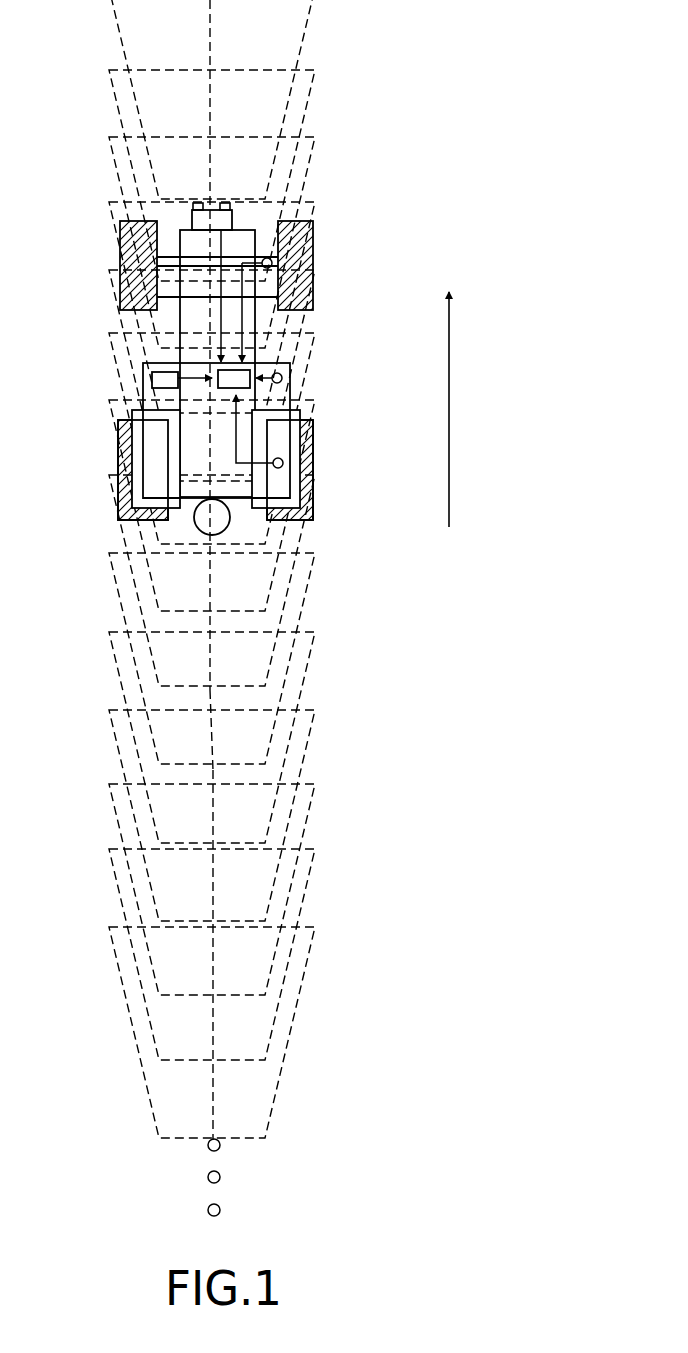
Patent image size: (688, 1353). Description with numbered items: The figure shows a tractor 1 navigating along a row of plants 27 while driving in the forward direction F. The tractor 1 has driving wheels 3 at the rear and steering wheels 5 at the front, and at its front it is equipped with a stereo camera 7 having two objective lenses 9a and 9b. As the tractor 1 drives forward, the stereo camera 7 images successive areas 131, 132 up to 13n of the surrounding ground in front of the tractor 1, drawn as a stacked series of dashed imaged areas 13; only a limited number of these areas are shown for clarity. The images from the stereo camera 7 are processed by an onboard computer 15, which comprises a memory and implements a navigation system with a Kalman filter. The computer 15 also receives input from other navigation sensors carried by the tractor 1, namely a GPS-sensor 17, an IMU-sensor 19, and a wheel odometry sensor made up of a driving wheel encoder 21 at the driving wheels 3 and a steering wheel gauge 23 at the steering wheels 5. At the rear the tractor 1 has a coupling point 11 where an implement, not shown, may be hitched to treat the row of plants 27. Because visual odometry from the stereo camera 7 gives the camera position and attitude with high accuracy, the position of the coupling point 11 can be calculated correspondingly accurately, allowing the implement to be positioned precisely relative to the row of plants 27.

The tractor 1 is at (166, 353).
The driving wheels 3 is at (118, 515).
The steering wheels 5 is at (120, 236).
The stereo camera 7 is at (232, 219).
The objective lens 9a is at (192, 204).
The objective lens 9b is at (231, 204).
The coupling point 11 is at (226, 526).
The imaged areas 13 is at (212, 497).
The imaged area 13n is at (305, 27).
The imaged area 132 is at (309, 861).
The imaged area 131 is at (309, 955).
The computer 15 is at (250, 388).
The GPS-sensor 17 is at (282, 378).
The IMU-sensor 19 is at (152, 380).
The driving wheel encoder 21 is at (283, 463).
The steering wheel gauge 23 is at (266, 268).
The row of plants 27 is at (208, 1148).
The forward direction F is at (453, 393).